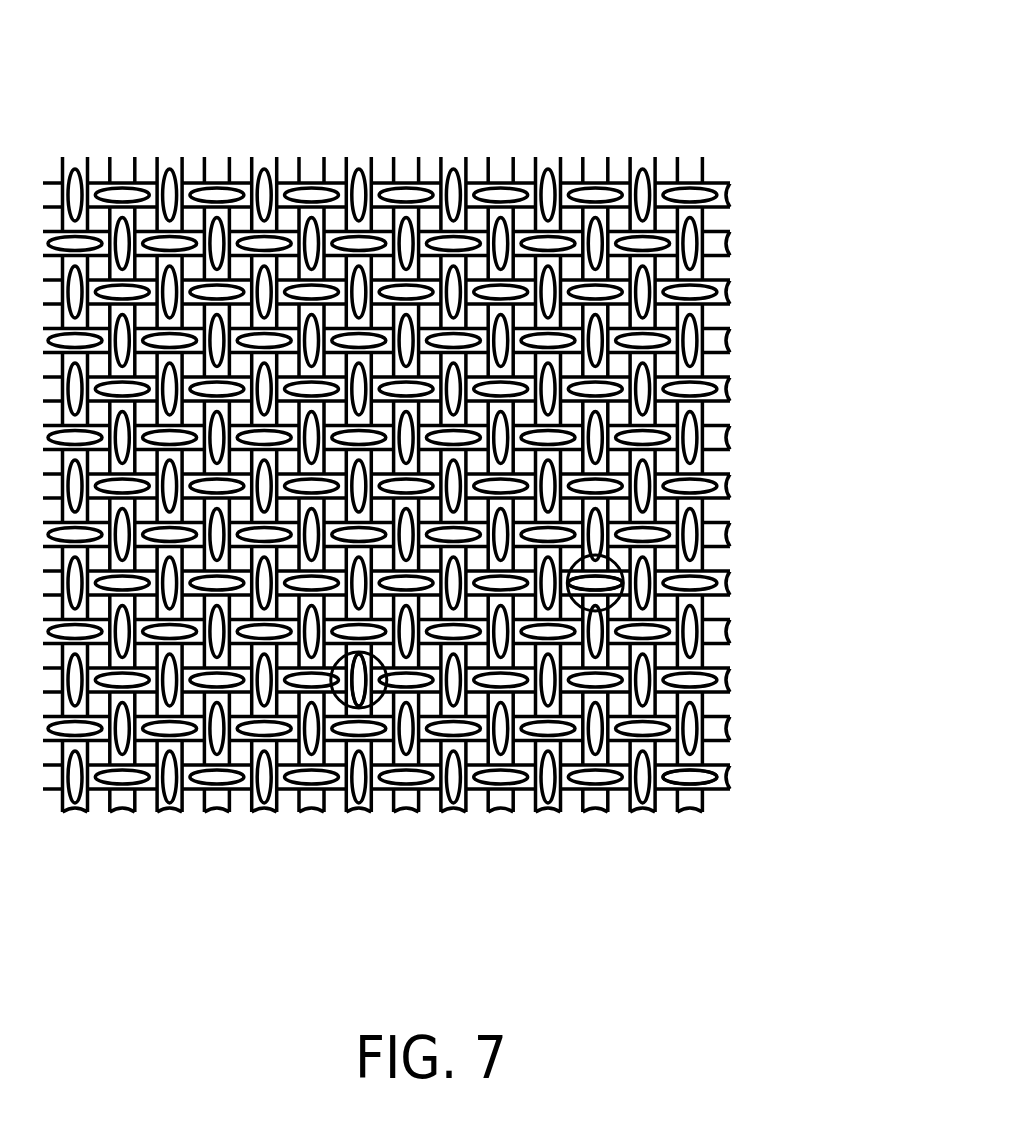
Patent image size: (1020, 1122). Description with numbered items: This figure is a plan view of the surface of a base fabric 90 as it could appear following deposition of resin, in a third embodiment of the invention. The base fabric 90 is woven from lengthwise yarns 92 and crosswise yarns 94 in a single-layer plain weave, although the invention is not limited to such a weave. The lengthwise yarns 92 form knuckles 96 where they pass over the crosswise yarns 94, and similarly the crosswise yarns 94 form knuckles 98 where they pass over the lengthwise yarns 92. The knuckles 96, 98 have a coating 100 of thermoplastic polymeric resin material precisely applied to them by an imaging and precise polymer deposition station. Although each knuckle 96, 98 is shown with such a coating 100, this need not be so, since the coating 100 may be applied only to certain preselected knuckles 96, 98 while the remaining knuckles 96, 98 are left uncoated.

The base fabric 90 is at (672, 95).
The lengthwise yarns 92 is at (458, 805).
The crosswise yarns 94 is at (723, 338).
The knuckles 96 is at (350, 712).
The knuckles 98 is at (703, 600).
The coating 100 is at (720, 775).